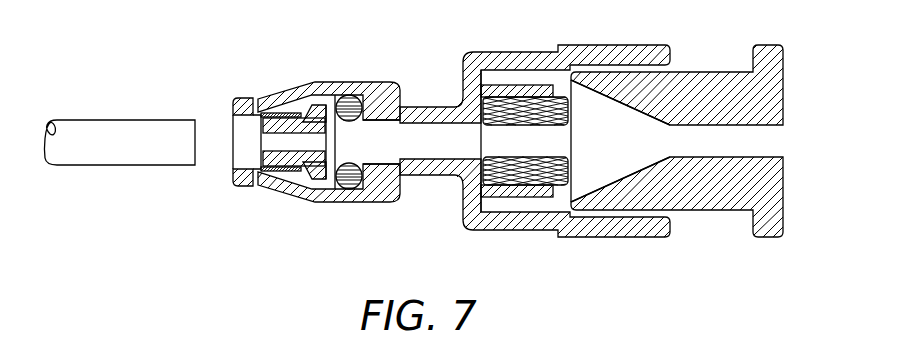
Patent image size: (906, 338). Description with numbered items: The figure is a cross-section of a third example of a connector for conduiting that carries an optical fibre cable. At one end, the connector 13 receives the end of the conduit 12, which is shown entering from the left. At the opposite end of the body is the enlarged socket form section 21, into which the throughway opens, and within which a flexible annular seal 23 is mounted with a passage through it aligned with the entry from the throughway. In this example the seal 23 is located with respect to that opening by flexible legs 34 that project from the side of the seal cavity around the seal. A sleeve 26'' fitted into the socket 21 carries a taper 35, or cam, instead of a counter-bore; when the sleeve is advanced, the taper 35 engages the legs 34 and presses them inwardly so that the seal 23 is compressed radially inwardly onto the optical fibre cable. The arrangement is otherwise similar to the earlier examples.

The conduit 12 is at (118, 120).
The connector 13 is at (341, 83).
The socket form section 21 is at (471, 57).
The flexible annular seal 23 is at (518, 186).
The insert / adapter 26'' is at (677, 131).
The flexible legs 34 is at (517, 92).
The taper 35 is at (628, 106).